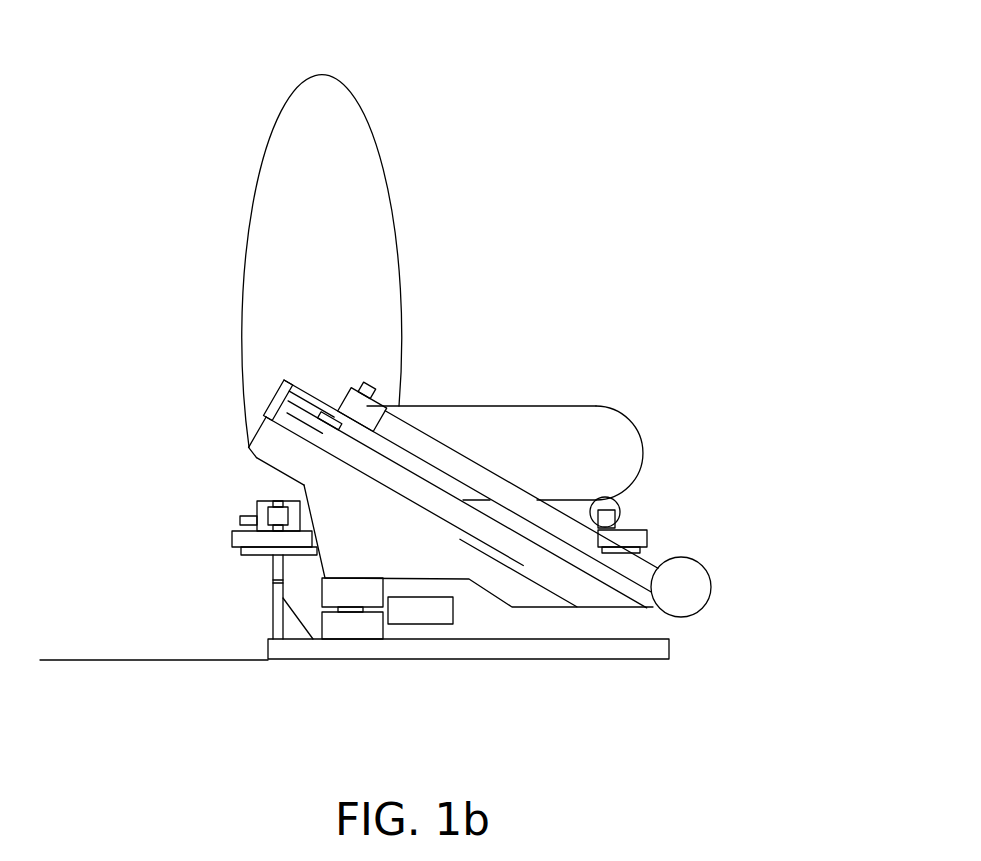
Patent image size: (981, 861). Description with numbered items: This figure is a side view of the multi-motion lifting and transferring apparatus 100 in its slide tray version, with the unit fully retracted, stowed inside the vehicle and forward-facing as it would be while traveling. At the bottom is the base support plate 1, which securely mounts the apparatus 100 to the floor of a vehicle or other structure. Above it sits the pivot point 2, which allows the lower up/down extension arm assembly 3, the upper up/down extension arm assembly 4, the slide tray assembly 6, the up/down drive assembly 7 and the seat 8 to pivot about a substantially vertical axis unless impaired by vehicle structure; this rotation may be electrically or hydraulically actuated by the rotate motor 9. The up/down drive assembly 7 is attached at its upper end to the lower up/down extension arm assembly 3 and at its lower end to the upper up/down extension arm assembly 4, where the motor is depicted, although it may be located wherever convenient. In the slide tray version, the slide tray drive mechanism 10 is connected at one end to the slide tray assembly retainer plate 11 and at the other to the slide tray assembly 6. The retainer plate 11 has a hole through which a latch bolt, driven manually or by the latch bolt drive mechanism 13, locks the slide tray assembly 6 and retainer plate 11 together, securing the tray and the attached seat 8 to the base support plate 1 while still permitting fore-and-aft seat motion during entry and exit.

The multi-motion lifting and transferring apparatus 100 is at (700, 52).
The base support plate 1 is at (358, 650).
The pivot point 2 is at (348, 622).
The lower up/down extension arm assembly 3 is at (528, 592).
The upper up/down extension arm assembly 4 is at (607, 593).
The slide tray assembly 6 is at (633, 535).
The up/down drive assembly 7 is at (497, 483).
The seat 8 is at (312, 202).
The rotate motor 9 is at (418, 612).
The slide tray drive mechanism 10 is at (610, 518).
The slide tray assembly retainer plate 11 is at (243, 519).
The latch bolt drive mechanism 13 is at (260, 506).